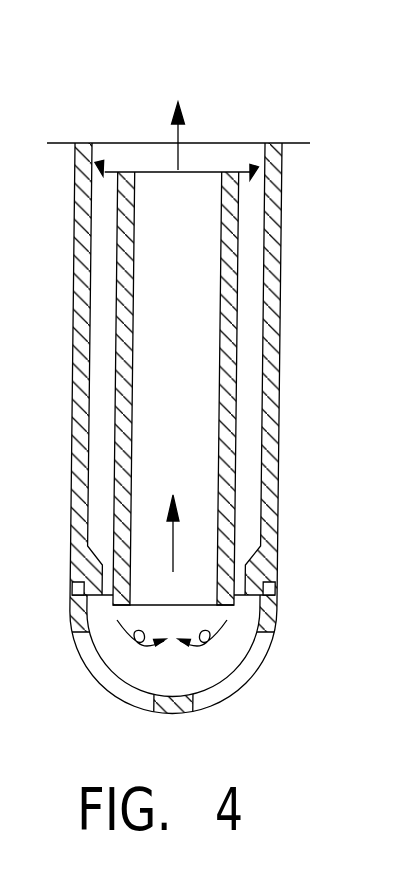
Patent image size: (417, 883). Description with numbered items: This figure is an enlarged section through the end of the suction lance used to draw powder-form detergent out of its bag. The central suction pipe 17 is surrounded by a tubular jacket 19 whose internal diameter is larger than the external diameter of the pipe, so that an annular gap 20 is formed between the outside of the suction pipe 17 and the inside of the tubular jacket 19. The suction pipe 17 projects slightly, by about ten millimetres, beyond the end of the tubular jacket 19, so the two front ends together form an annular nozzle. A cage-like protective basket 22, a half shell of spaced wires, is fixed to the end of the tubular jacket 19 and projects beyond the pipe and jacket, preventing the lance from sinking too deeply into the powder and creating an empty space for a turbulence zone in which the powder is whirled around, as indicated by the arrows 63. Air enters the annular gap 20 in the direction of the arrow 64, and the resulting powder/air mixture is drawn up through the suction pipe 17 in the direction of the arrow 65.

The suction pipe 17 is at (233, 335).
The tubular jacket 19 is at (277, 203).
The annular gap 20 is at (104, 182).
The protective basket 22 is at (278, 604).
The arrows indicating whirled powder 63 is at (210, 648).
The arrow indicating air inflow 64 is at (248, 186).
The arrow indicating powder/air flow 65 is at (178, 100).